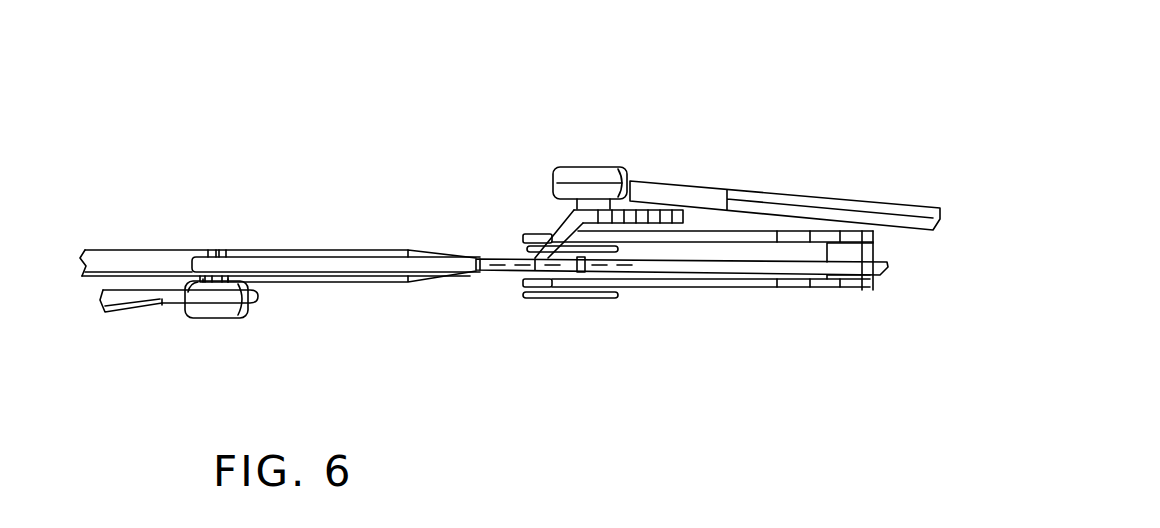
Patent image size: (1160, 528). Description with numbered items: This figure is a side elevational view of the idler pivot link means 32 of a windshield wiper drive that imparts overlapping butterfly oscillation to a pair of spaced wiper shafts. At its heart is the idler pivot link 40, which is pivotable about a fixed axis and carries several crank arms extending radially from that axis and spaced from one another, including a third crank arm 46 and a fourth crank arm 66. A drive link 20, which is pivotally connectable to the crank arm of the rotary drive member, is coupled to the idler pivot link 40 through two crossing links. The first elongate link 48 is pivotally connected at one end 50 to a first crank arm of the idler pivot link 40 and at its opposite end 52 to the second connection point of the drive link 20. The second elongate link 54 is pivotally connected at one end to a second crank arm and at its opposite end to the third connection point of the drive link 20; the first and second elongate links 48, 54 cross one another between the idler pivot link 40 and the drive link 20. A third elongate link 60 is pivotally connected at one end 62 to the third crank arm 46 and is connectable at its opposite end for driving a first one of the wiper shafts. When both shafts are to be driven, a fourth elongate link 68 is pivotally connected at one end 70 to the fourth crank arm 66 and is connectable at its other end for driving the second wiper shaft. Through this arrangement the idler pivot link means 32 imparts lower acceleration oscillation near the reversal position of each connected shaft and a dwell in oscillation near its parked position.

The drive link 20 is at (131, 257).
The idler pivot link means 32 is at (447, 311).
The idler pivot link 40 is at (471, 259).
The third crank arm 46 is at (253, 266).
The first elongate link 48 is at (757, 232).
The one end of first elongate link 50 is at (523, 236).
The opposite end of first elongate link 52 is at (854, 236).
The second elongate link 54 is at (613, 299).
The third elongate link 60 is at (106, 314).
The one end of third elongate link 62 is at (177, 303).
The fourth crank arm 66 is at (661, 224).
The fourth elongate link 68 is at (738, 190).
The one end of fourth elongate link 70 is at (633, 184).